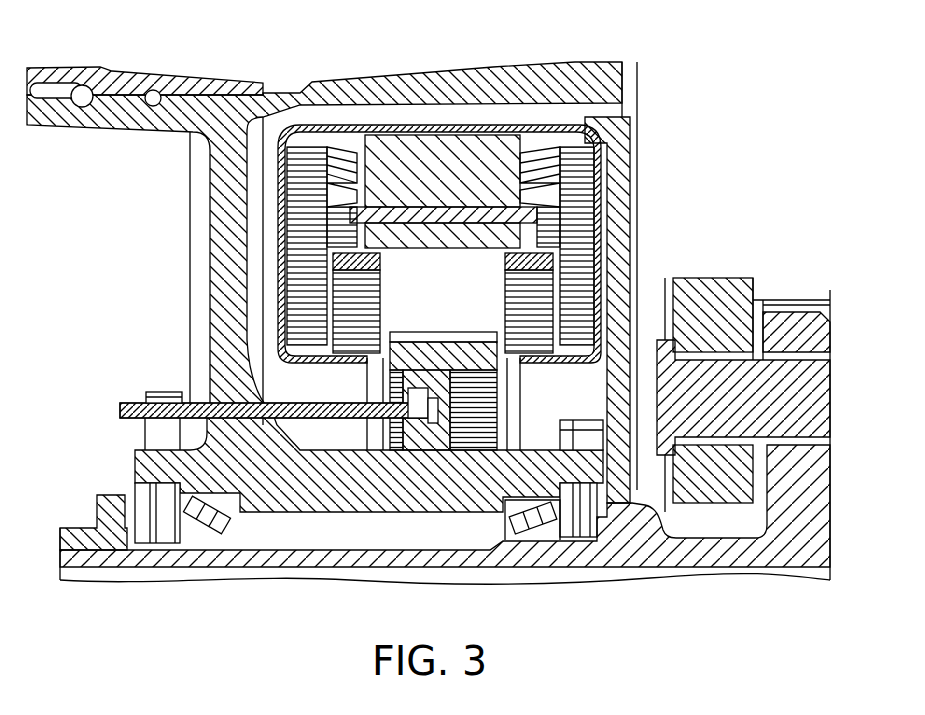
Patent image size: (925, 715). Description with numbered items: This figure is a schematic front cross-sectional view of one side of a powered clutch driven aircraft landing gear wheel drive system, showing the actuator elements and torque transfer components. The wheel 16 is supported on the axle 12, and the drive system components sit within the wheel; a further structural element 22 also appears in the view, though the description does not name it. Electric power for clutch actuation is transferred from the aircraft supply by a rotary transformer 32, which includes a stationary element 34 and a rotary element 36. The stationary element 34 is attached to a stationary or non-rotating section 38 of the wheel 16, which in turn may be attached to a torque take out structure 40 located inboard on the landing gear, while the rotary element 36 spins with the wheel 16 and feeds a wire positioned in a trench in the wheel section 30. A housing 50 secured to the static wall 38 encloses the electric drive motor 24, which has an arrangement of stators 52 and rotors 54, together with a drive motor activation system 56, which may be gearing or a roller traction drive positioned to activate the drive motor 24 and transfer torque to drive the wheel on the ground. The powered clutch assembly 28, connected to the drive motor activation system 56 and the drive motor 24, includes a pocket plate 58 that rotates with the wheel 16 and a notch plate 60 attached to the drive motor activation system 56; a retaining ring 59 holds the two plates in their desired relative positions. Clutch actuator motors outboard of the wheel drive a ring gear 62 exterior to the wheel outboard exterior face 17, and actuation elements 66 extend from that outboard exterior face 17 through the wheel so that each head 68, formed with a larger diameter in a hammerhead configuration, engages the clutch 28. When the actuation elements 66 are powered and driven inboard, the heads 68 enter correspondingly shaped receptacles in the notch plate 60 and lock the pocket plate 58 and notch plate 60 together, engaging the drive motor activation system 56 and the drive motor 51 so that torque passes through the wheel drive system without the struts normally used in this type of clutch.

The axle 12 is at (275, 578).
The wheel 16 is at (172, 214).
The outboard exterior face 17 is at (210, 268).
The mounting arm 22 is at (398, 93).
The electric drive motor 24 is at (554, 110).
The powered clutch assembly 28 is at (462, 468).
The wheel section 30 is at (290, 489).
The rotary transformer 32 is at (580, 352).
The stationary element 34 is at (600, 483).
The rotary element 36 is at (593, 437).
The stationary section 38 is at (620, 399).
The torque take out structure 40 is at (653, 328).
The housing 50 is at (600, 200).
The drive motor 51 is at (272, 196).
The stator 52 is at (580, 183).
The rotor 54 is at (570, 277).
The drive motor activation system 56 is at (373, 339).
The pocket plate 58 is at (440, 380).
The retaining ring 59 is at (460, 423).
The notch plate 60 is at (420, 437).
The ring gear 62 is at (160, 392).
The actuation element 66 is at (135, 410).
The head 68 is at (416, 410).